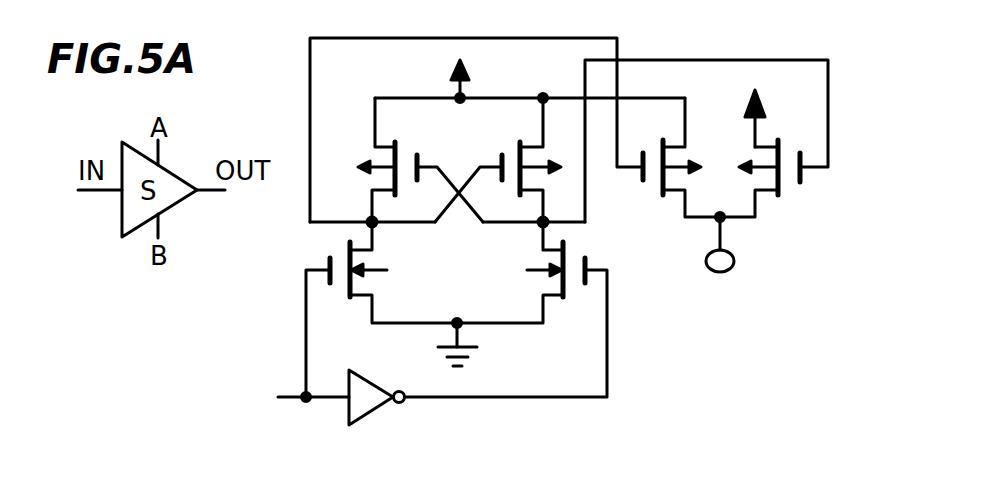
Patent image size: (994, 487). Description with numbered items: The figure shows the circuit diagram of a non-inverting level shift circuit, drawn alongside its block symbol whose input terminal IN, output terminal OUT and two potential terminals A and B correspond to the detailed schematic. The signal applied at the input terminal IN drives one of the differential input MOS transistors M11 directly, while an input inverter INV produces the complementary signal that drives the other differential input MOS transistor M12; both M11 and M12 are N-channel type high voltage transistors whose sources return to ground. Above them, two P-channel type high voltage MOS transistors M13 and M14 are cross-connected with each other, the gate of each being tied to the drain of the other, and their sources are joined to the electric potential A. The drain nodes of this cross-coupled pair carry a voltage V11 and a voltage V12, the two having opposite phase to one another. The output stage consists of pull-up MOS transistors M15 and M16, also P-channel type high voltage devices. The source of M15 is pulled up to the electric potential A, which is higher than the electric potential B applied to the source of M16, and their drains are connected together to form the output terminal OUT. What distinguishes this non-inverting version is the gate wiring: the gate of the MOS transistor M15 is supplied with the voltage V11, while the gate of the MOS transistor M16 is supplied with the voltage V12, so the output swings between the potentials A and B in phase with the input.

The differential input MOS transistor M11 is at (381, 309).
The differential input MOS transistor M12 is at (506, 309).
The cross-connected MOS transistor M13 is at (400, 160).
The cross-connected MOS transistor M14 is at (498, 160).
The pull-up MOS transistor M15 is at (695, 157).
The pull-up MOS transistor M16 is at (790, 178).
The voltage V11 is at (365, 226).
The voltage V12 is at (548, 226).
The input inverter INV is at (372, 407).
The input terminal IN is at (308, 385).
The output terminal OUT is at (722, 260).
The electric potential A is at (473, 77).
The electric potential B is at (770, 118).